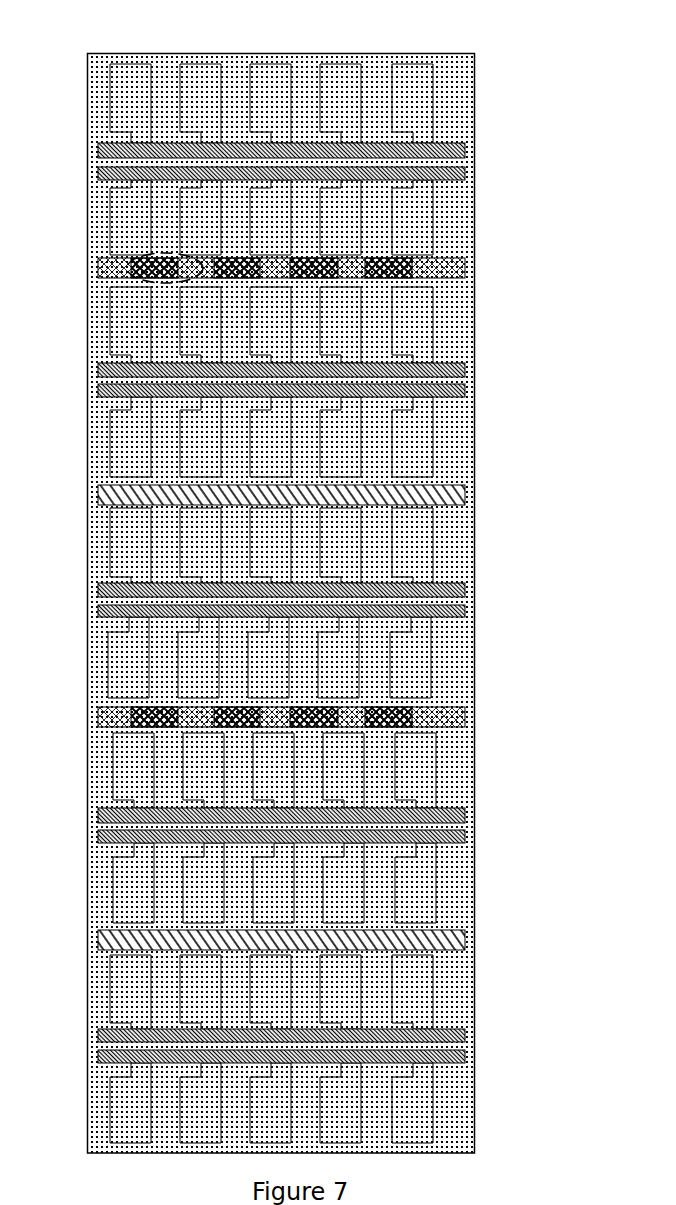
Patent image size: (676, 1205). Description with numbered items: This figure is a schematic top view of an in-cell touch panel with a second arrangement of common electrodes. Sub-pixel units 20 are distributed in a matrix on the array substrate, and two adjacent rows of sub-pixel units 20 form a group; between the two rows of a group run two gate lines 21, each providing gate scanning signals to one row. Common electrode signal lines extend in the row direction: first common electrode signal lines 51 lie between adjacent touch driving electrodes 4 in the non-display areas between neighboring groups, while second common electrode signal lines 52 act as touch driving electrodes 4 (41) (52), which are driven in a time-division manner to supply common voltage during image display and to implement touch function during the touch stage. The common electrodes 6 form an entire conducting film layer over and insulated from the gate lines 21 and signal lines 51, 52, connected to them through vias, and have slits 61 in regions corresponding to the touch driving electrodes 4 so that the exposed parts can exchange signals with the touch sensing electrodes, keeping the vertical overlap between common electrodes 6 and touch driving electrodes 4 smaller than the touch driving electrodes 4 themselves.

The sub-pixel unit 20 is at (413, 83).
The common electrode 6 is at (474, 132).
The gate line 21 is at (545, 213).
The touch driving electrode 4 is at (321, 507).
The touch driving electrode 41 is at (281, 492).
The second common electrode signal line 52 is at (281, 492).
The first common electrode signal line 51 is at (465, 500).
The slit 61 is at (123, 258).